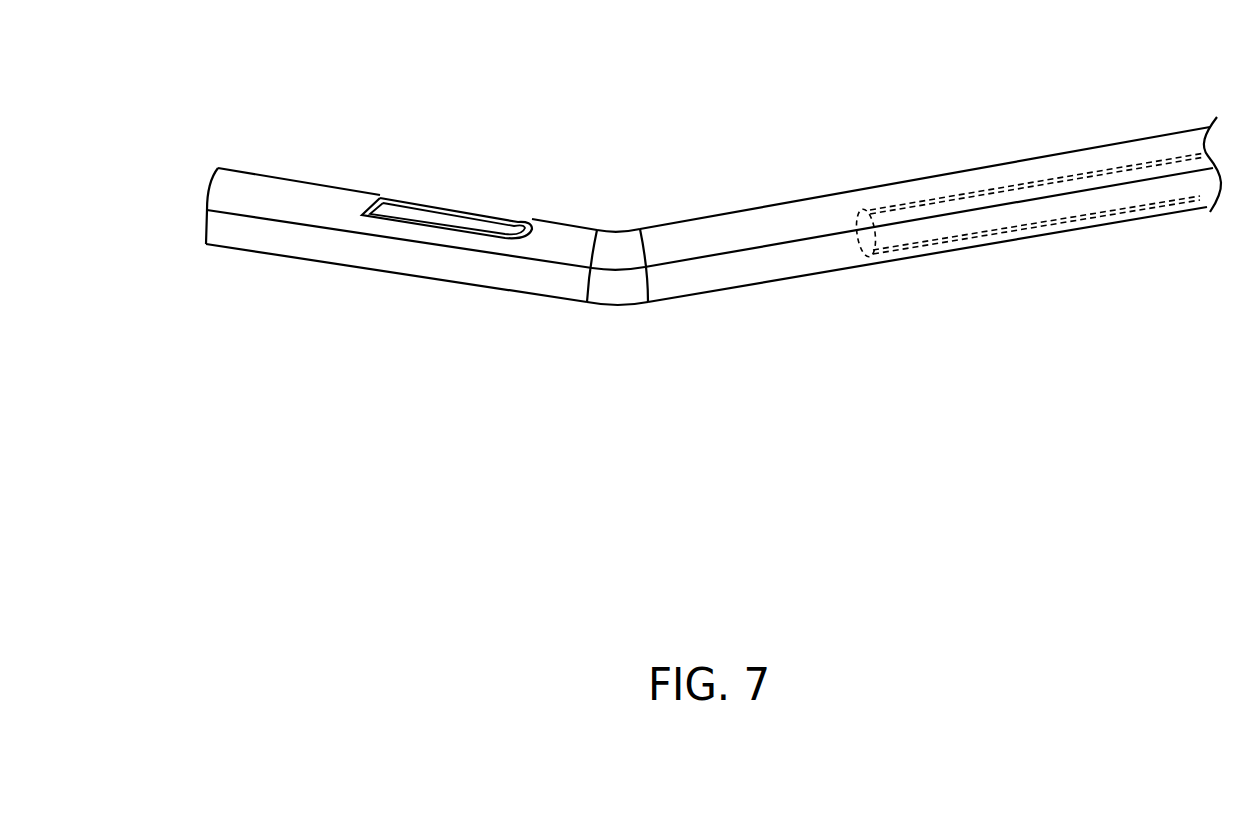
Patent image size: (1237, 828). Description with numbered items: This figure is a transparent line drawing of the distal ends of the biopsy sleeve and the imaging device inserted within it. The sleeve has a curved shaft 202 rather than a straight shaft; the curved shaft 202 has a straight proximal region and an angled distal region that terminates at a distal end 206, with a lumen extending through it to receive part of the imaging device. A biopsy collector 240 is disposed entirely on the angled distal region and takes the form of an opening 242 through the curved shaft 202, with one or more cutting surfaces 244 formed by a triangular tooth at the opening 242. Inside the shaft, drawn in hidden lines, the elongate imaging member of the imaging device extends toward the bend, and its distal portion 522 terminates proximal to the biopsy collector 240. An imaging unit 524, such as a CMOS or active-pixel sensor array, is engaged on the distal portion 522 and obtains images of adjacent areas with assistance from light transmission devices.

The curved shaft 202 is at (772, 282).
The distal end 206 is at (207, 248).
The biopsy collector 240 is at (512, 158).
The opening 242 is at (530, 217).
The cutting surface 244 is at (380, 197).
The distal portion 522 is at (896, 273).
The imaging unit 524 is at (869, 260).